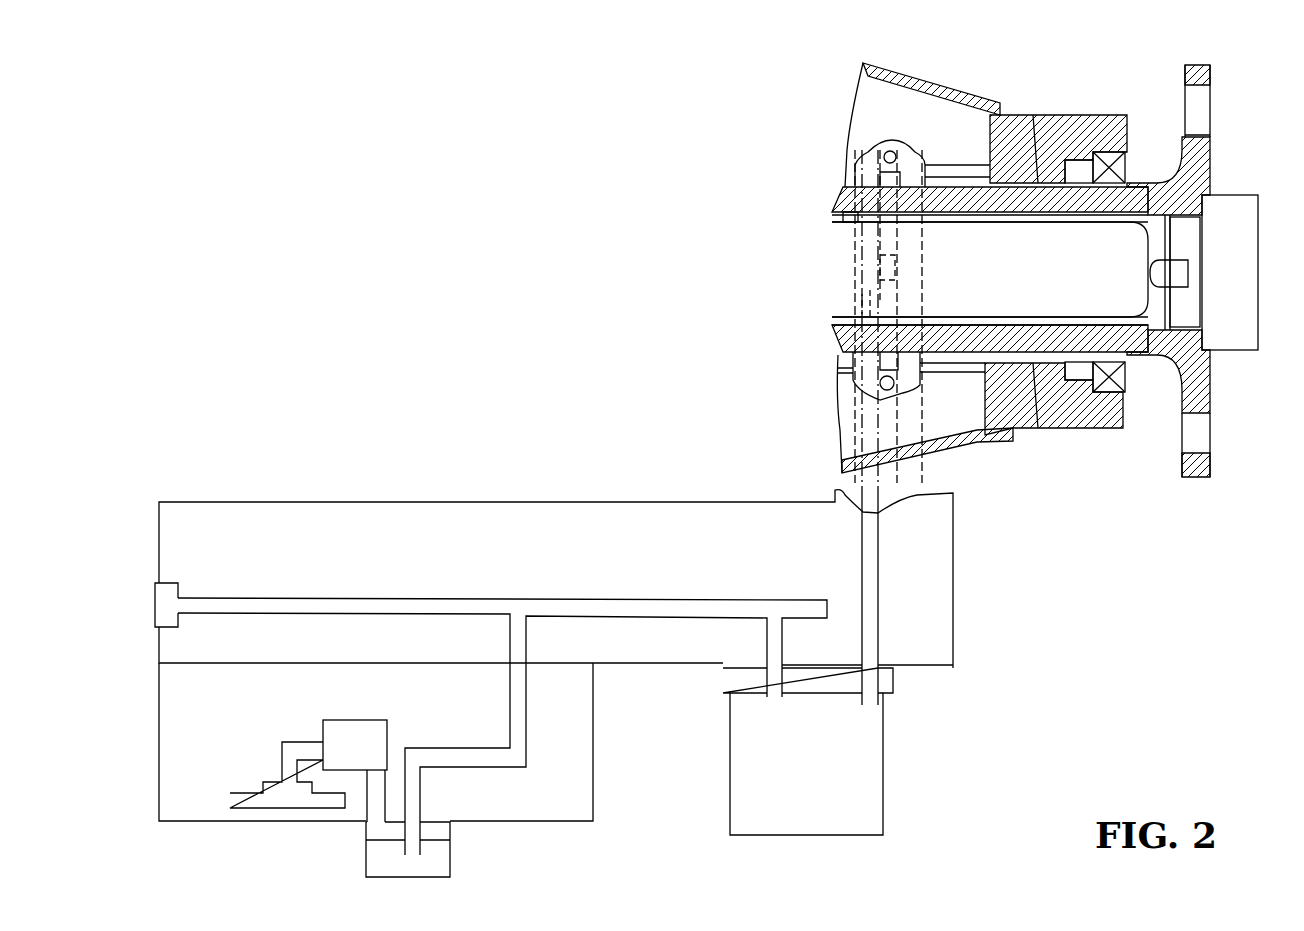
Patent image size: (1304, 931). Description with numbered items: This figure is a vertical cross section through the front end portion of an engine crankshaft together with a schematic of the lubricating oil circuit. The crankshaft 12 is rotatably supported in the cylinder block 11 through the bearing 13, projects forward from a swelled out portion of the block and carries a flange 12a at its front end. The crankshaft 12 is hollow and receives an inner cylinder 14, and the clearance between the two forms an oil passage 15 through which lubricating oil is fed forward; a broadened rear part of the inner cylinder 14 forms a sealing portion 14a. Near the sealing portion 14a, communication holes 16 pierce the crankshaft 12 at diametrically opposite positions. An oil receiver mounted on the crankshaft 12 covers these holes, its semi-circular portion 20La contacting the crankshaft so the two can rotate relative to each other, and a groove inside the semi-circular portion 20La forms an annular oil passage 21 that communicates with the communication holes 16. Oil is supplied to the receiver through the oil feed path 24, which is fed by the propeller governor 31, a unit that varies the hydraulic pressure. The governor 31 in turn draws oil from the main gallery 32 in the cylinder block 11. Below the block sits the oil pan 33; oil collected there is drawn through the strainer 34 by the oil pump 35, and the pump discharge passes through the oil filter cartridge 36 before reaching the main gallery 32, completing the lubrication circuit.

The cylinder block 11 is at (938, 82).
The crankshaft 12 is at (1036, 115).
The flange 12a is at (1210, 68).
The bearing 13 is at (1128, 162).
The inner cylinder 14 is at (1060, 215).
The sealing portion 14a is at (852, 217).
The oil passage 15 is at (1000, 212).
The communication holes 16 is at (887, 270).
The semi-circular portion 20La is at (877, 147).
The annular oil passage 21 is at (878, 172).
The oil feed path 24 is at (870, 298).
The propeller governor 31 is at (885, 765).
The main gallery 32 is at (588, 598).
The oil pan 33 is at (595, 757).
The strainer 34 is at (232, 793).
The oil pump 35 is at (358, 718).
The oil filter cartridge 36 is at (452, 848).